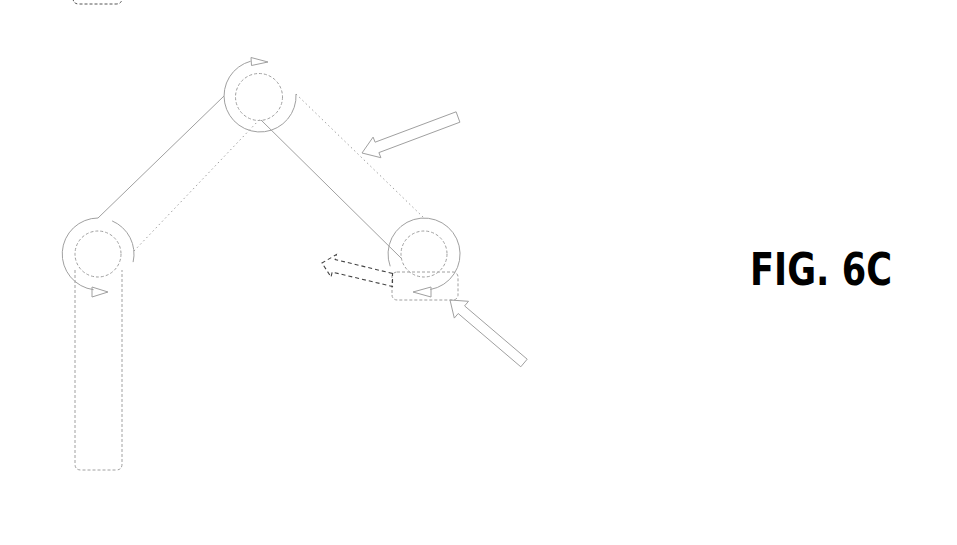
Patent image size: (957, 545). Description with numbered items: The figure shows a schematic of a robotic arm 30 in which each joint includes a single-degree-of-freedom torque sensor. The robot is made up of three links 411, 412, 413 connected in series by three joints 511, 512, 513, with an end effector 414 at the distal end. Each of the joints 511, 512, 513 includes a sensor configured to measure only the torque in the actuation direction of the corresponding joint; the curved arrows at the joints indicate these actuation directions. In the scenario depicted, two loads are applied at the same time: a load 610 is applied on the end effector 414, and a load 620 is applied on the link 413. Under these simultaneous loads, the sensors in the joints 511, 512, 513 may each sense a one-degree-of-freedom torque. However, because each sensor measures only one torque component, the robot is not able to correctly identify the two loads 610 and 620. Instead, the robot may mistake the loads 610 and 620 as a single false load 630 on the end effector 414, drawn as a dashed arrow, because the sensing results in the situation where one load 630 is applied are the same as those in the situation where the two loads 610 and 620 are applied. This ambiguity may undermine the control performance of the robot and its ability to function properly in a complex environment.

The robotic arm 30 is at (88, 140).
The link 411 is at (98, 370).
The link 412 is at (179, 173).
The link 413 is at (342, 176).
The end effector 414 is at (408, 303).
The joint 511 is at (115, 273).
The joint 512 is at (277, 78).
The joint 513 is at (442, 237).
The load 610 is at (504, 341).
The load 620 is at (422, 125).
The false load 630 is at (339, 271).